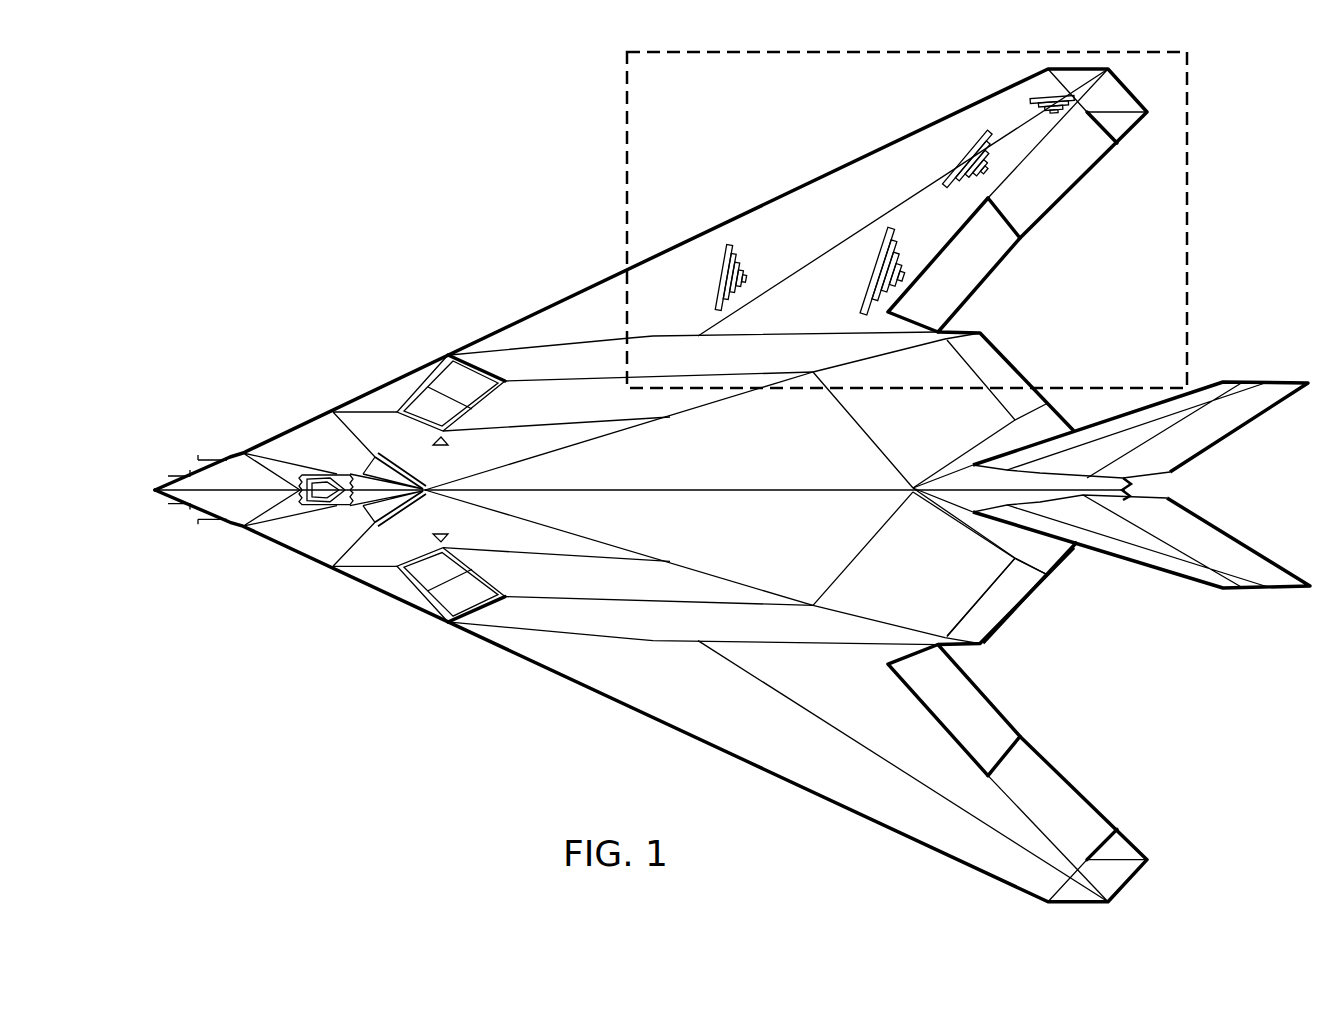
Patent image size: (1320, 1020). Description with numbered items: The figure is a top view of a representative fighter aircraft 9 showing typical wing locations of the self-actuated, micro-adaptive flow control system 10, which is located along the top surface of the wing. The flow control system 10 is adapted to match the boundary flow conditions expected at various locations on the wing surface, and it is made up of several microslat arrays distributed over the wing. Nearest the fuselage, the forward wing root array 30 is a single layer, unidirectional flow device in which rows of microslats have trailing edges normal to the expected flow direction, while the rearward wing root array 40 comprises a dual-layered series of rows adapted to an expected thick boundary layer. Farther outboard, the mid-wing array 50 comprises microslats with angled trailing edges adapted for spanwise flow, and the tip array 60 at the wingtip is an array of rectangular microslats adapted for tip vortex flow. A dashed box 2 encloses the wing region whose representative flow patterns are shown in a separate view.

The aircraft 9 is at (593, 693).
The self-actuated, micro-adaptive flow control system 10 is at (834, 188).
The dashed box 2 is at (1192, 233).
The forward wing root array 30 is at (724, 250).
The rearward wing root array 40 is at (884, 232).
The mid-wing array 50 is at (968, 144).
The tip array 60 is at (1079, 121).